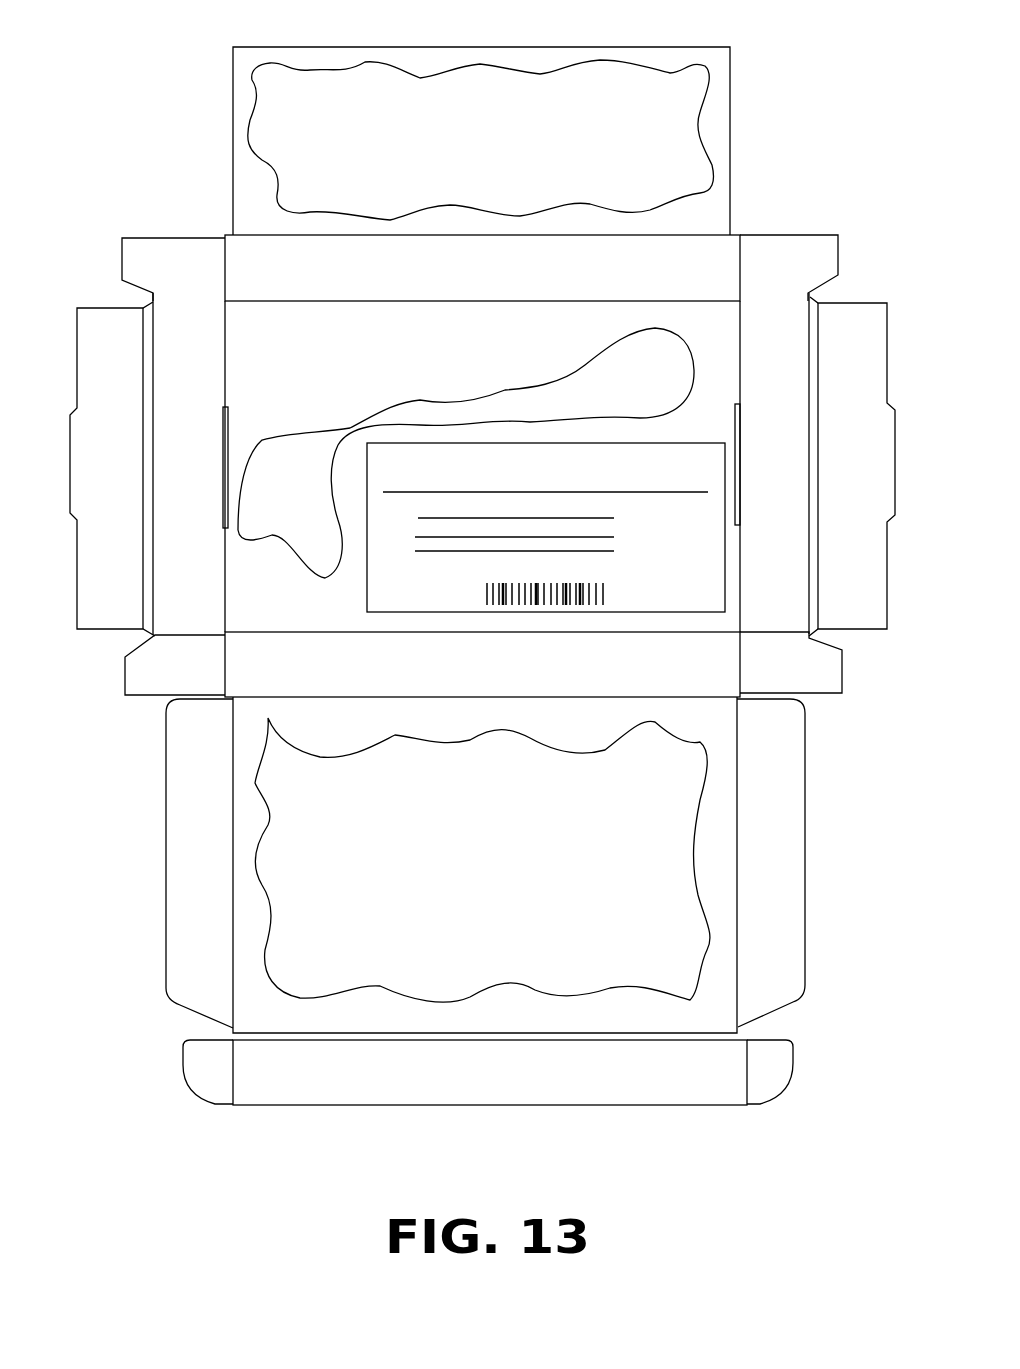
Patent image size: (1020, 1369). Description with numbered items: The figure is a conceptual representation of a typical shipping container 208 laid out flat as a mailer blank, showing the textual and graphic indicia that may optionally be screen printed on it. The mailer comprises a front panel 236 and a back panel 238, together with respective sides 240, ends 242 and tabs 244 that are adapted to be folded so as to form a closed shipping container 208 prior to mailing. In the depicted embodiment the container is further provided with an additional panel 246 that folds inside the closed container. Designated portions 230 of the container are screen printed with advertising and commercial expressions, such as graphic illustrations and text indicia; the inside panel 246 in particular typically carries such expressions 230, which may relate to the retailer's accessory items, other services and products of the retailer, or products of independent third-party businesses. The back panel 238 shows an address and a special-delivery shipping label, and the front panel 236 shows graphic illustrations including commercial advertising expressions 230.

The shipping container 208 is at (182, 179).
The advertising and commercial expressions 230 is at (690, 83).
The front panel 236 is at (531, 1017).
The back panel 238 is at (300, 605).
The sides 240 is at (495, 279).
The ends 242 is at (175, 352).
The tabs 244 is at (140, 257).
The additional panel 246 is at (232, 80).